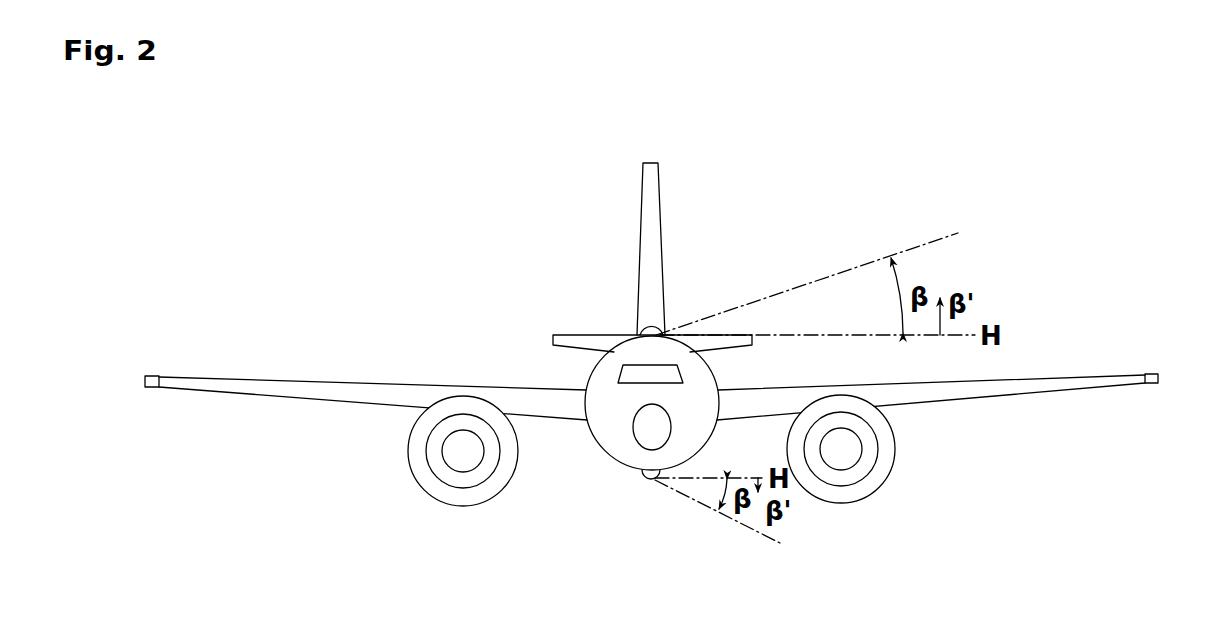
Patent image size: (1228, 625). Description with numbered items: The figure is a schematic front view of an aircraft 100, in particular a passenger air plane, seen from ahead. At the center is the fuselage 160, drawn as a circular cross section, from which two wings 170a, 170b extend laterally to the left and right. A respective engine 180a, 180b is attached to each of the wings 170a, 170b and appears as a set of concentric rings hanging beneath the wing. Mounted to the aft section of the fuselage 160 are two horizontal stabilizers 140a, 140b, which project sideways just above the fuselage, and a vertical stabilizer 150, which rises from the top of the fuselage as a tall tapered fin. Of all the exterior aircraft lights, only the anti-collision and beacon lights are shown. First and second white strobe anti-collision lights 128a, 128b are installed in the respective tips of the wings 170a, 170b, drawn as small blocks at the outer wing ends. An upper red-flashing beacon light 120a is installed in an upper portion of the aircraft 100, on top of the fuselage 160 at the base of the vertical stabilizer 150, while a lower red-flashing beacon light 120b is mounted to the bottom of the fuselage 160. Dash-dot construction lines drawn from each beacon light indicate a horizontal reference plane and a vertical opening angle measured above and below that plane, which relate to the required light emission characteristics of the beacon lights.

The aircraft 100 is at (938, 188).
The vertical stabilizer 150 is at (650, 197).
The upper red-flashing beacon light 120a is at (638, 305).
The lower red-flashing beacon light 120b is at (660, 485).
The horizontal stabilizer 140a is at (548, 335).
The horizontal stabilizer 140b is at (757, 332).
The fuselage 160 is at (600, 468).
The wing 170a is at (262, 368).
The wing 170b is at (1042, 362).
The first white strobe anti-collision light 128a is at (152, 387).
The second white strobe anti-collision light 128b is at (1155, 384).
The engine 180a is at (408, 467).
The engine 180b is at (898, 463).